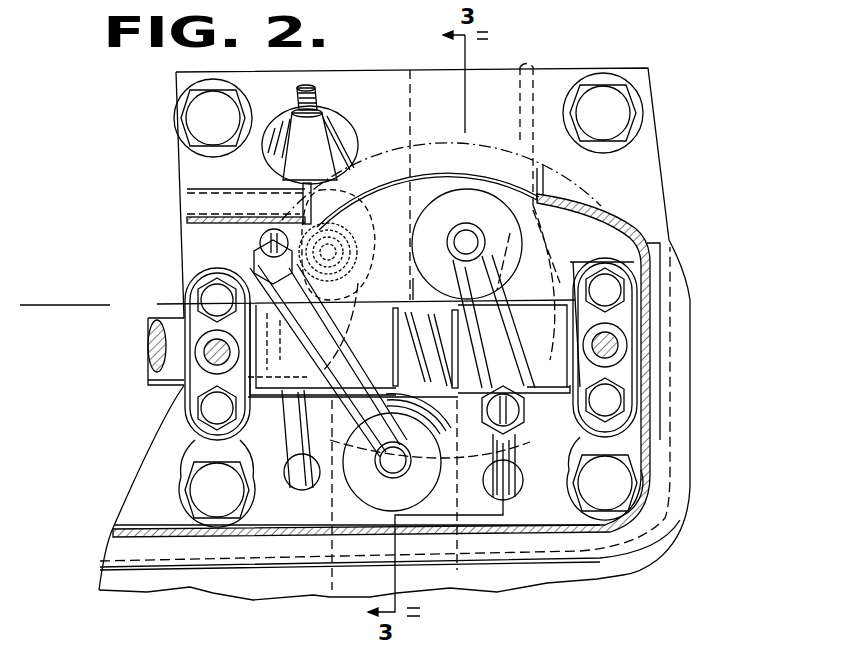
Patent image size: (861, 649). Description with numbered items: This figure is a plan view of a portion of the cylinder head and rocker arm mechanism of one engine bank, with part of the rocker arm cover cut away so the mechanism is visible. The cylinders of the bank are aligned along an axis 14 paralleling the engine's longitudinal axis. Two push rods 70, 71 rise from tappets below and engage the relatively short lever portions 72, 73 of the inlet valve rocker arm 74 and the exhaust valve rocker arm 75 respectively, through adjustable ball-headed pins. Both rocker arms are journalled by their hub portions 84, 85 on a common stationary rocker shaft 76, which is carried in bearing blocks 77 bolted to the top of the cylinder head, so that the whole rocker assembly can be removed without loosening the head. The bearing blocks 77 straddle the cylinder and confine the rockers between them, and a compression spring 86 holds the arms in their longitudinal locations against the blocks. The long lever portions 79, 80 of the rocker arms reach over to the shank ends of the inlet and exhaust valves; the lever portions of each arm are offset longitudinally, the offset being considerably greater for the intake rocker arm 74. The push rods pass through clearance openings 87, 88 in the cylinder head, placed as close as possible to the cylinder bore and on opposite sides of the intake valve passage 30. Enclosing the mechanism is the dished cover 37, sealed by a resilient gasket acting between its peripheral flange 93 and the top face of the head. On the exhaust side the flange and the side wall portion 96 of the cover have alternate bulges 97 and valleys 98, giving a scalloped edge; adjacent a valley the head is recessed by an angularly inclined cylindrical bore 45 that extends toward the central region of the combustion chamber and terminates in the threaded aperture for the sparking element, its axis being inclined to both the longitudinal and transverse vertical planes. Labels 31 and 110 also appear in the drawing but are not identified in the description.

The axis 14 is at (82, 318).
The intake valve passage 30 is at (457, 577).
The housing lug 31 is at (518, 66).
The dished cover 37 is at (662, 243).
The angularly inclined cylindrical bore 45 is at (330, 117).
The push rod 70 is at (297, 438).
The push rod 71 is at (518, 452).
The short lever portion 72 is at (253, 263).
The short lever portion 73 is at (530, 381).
The inlet valve rocker arm 74 is at (330, 357).
The exhaust valve rocker arm 75 is at (493, 318).
The rocker shaft 76 is at (146, 386).
The bearing block 77 is at (197, 318).
The long lever portion 79 is at (355, 397).
The long lever portion 80 is at (482, 250).
The hub portion 84 is at (337, 313).
The hub portion 85 is at (548, 300).
The compression spring 86 is at (360, 298).
The clearance opening 87 is at (292, 484).
The clearance opening 88 is at (522, 477).
The peripheral flange 93 is at (257, 173).
The side wall portion 96 is at (203, 217).
The bulge 97 is at (478, 176).
The valley 98 is at (378, 200).
The wall 110 is at (381, 351).